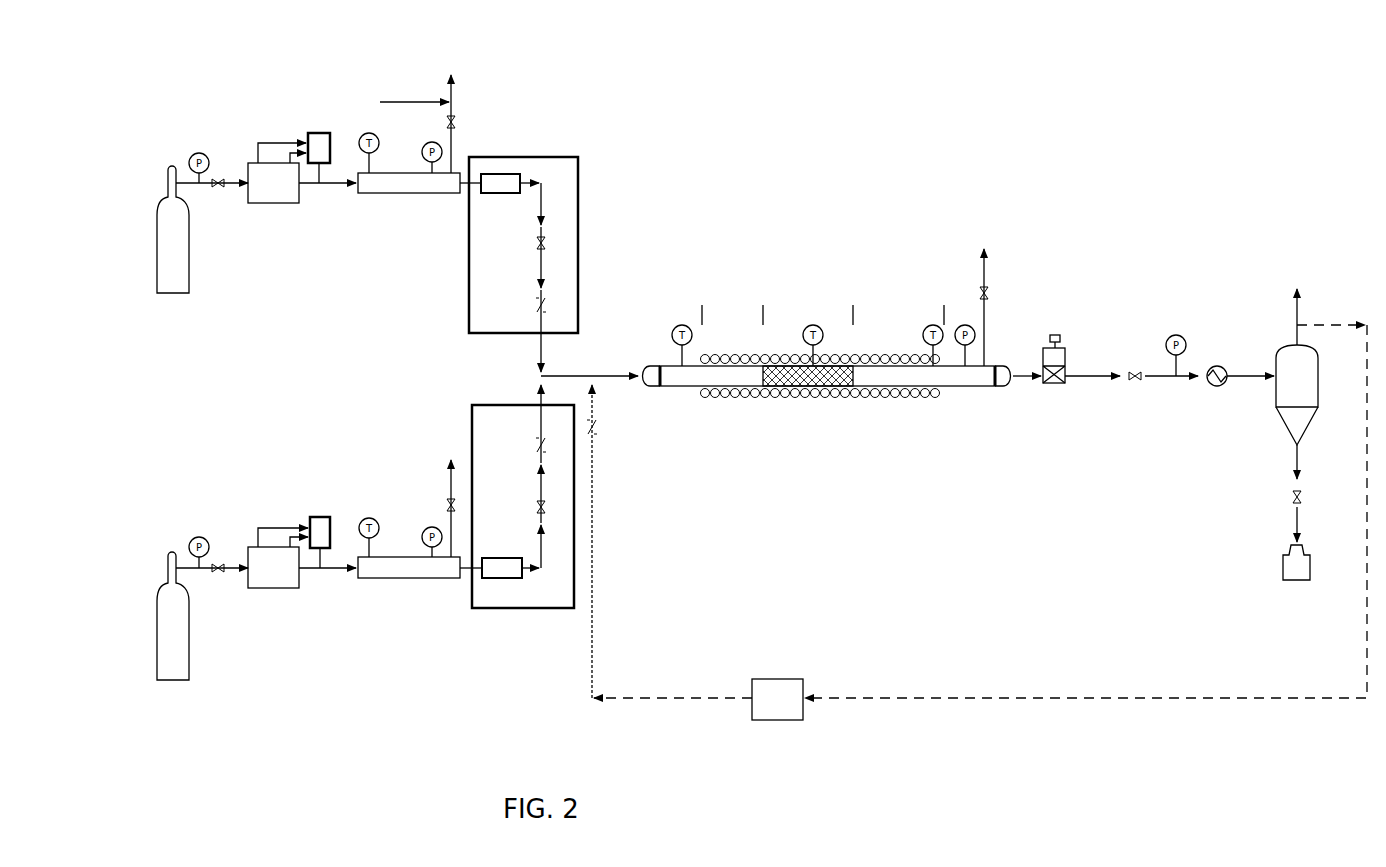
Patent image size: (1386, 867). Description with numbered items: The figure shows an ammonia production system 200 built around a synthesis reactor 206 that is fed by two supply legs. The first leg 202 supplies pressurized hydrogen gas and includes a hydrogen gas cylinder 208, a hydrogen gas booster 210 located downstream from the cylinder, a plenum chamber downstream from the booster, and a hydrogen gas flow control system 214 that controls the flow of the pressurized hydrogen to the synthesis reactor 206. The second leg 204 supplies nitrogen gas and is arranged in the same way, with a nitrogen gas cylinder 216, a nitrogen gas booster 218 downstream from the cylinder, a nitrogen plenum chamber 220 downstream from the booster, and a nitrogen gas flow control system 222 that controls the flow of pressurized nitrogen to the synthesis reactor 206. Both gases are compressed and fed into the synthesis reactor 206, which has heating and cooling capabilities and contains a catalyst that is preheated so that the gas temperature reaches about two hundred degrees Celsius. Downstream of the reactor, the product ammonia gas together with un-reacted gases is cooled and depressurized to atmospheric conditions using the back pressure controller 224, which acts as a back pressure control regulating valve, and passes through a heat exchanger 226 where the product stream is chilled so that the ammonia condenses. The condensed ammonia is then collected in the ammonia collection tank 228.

The ammonia production system 200 is at (725, 213).
The first leg 202 is at (323, 228).
The second leg 204 is at (305, 484).
The synthesis reactor 206 is at (751, 412).
The hydrogen gas cylinder 208 is at (172, 283).
The hydrogen gas booster 210 is at (272, 203).
The hydrogen gas flow control system 214 is at (545, 157).
The nitrogen gas cylinder 216 is at (172, 670).
The nitrogen gas booster 218 is at (275, 588).
The nitrogen plenum chamber 220 is at (423, 578).
The nitrogen gas flow control system 222 is at (535, 608).
The back pressure controller 224 is at (1052, 398).
The heat exchanger 226 is at (1210, 398).
The ammonia collection tank 228 is at (1285, 580).